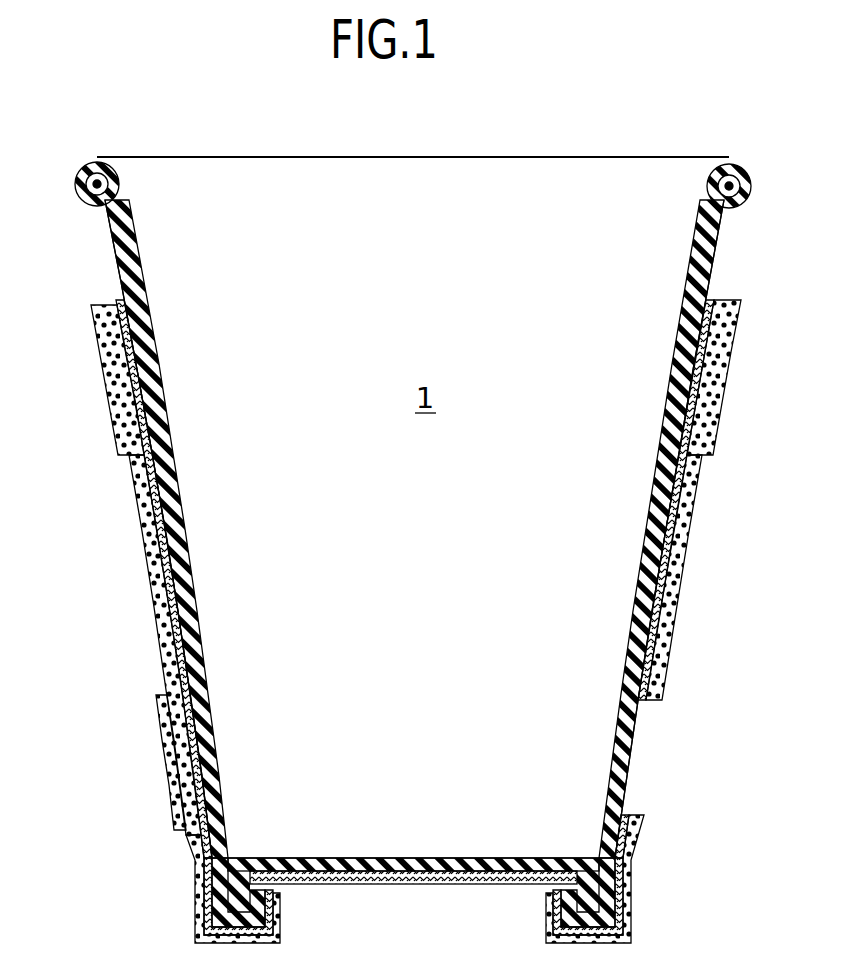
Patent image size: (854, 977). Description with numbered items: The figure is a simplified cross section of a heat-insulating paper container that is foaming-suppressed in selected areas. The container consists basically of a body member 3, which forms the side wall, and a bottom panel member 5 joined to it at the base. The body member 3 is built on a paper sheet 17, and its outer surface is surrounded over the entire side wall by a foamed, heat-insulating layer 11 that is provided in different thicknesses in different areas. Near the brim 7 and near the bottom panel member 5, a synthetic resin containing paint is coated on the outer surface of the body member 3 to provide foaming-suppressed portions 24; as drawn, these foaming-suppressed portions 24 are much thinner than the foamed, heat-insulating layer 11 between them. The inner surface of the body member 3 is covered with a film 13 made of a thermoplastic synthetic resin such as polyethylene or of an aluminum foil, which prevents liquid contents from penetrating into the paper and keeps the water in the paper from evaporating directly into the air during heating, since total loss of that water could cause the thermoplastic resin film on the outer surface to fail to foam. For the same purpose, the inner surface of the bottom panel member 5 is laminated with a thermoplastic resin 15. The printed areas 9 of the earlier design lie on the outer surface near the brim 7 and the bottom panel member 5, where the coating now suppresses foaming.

The body member 3 is at (638, 560).
The bottom panel member 5 is at (415, 856).
The brim 7 is at (737, 158).
The printed area 9 is at (103, 341).
The foamed heat-insulating layer 11 is at (153, 636).
The film 13 is at (180, 484).
The thermoplastic resin 15 is at (350, 857).
The paper sheet 17 is at (165, 536).
The foaming-suppressed portion 24 is at (113, 256).